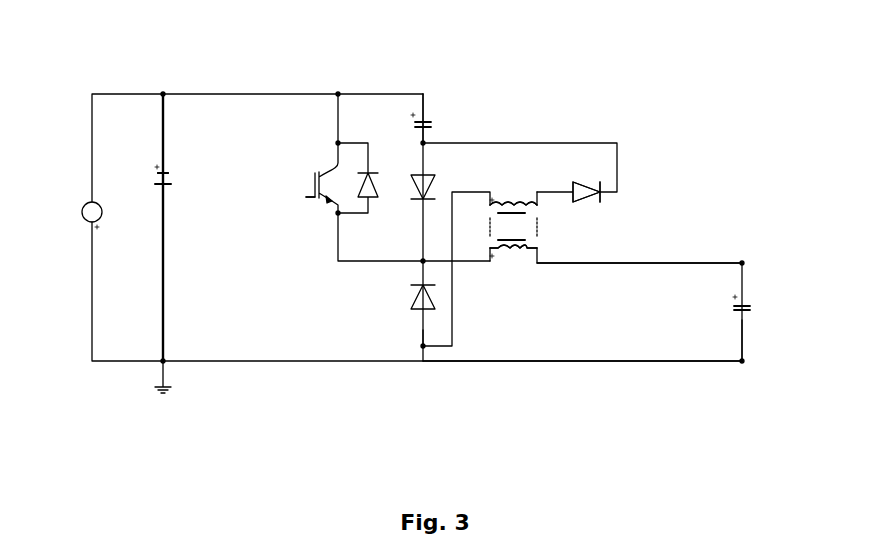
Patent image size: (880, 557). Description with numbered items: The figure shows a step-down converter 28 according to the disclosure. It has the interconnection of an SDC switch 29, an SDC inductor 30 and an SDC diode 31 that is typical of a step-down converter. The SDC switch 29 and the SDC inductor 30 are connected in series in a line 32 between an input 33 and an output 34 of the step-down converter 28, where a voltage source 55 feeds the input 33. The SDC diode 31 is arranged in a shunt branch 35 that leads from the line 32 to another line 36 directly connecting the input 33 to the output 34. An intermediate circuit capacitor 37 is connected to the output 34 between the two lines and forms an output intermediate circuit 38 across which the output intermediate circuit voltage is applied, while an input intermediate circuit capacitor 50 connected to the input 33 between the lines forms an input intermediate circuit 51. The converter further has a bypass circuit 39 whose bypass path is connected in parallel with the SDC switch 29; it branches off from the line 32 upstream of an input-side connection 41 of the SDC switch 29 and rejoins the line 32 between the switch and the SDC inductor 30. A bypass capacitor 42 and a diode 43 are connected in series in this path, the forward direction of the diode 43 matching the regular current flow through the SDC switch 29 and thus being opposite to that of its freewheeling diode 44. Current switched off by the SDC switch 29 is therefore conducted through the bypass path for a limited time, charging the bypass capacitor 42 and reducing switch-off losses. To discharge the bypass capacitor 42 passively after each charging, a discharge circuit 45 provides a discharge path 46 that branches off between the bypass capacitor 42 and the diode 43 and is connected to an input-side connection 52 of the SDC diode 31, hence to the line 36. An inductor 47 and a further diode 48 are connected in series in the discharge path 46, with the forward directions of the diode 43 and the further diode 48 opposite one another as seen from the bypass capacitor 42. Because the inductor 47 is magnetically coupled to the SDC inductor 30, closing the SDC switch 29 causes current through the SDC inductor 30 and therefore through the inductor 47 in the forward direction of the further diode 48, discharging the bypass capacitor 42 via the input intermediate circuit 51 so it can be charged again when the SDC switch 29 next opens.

The step-down converter 28 is at (84, 59).
The SDC switch 29 is at (297, 203).
The SDC inductor 30 is at (515, 248).
The SDC diode 31 is at (420, 297).
The line 32 is at (636, 263).
The input 33 is at (163, 93).
The output 34 is at (742, 262).
The shunt branch 35 is at (410, 330).
The line 36 is at (492, 363).
The intermediate circuit capacitor 37 is at (745, 302).
The output intermediate circuit 38 is at (757, 320).
The bypass circuit 39 is at (432, 100).
The input-side connection 41 is at (338, 93).
The bypass capacitor 42 is at (428, 124).
The diode 43 is at (418, 201).
The freewheeling diode 44 is at (380, 186).
The discharge circuit 45 is at (595, 128).
The discharge path 46 is at (586, 192).
The inductor 47 is at (510, 206).
The further diode 48 is at (592, 188).
The input intermediate circuit capacitor 50 is at (167, 183).
The input intermediate circuit 51 is at (140, 153).
The input-side connection 52 is at (421, 348).
The voltage source 55 is at (88, 222).